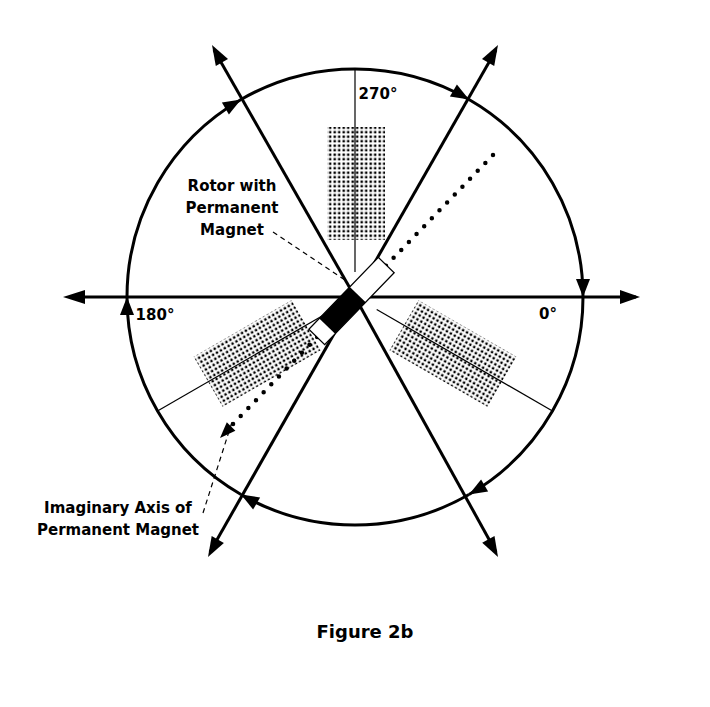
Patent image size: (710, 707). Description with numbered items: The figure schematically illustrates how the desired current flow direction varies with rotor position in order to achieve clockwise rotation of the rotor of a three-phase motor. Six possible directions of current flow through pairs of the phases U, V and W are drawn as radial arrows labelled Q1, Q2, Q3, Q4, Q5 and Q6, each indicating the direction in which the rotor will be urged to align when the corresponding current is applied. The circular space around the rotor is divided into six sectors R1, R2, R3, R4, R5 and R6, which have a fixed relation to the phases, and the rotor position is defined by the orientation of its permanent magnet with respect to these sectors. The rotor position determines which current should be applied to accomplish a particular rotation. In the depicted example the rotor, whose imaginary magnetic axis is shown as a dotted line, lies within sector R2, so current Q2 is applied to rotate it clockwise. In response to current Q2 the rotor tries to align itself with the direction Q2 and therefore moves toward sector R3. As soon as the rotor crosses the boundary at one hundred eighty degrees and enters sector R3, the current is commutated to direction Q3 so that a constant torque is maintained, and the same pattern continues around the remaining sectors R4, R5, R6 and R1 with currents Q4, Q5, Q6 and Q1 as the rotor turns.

The current flow direction Q1 is at (203, 290).
The current flow direction Q2 is at (277, 160).
The current flow direction Q3 is at (432, 160).
The current flow direction Q4 is at (506, 291).
The current flow direction Q5 is at (436, 438).
The current flow direction Q6 is at (270, 438).
The sector R1 is at (355, 529).
The sector R2 is at (219, 396).
The sector R3 is at (184, 199).
The sector R4 is at (355, 154).
The sector R5 is at (529, 199).
The sector R6 is at (483, 396).